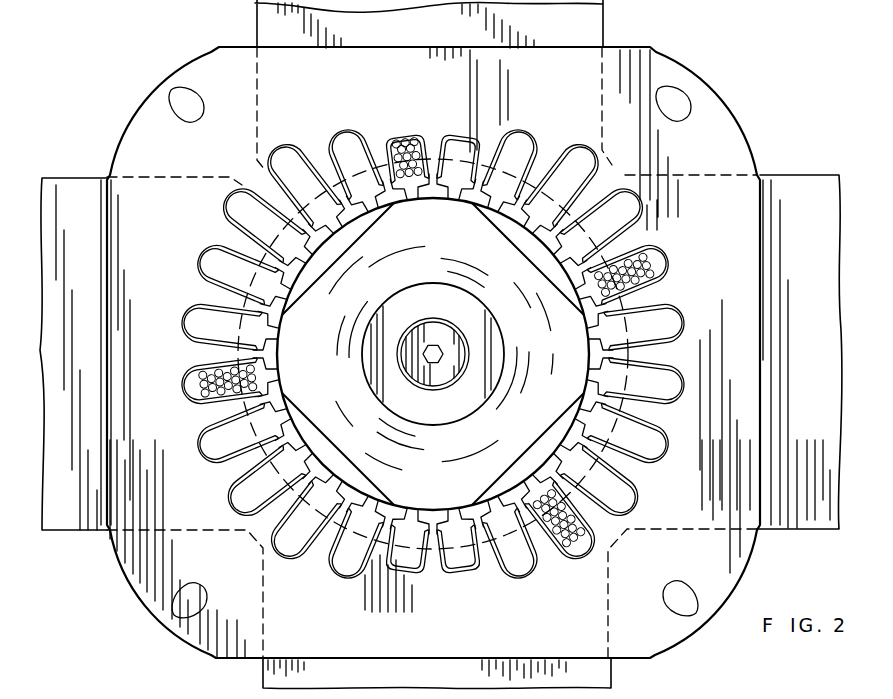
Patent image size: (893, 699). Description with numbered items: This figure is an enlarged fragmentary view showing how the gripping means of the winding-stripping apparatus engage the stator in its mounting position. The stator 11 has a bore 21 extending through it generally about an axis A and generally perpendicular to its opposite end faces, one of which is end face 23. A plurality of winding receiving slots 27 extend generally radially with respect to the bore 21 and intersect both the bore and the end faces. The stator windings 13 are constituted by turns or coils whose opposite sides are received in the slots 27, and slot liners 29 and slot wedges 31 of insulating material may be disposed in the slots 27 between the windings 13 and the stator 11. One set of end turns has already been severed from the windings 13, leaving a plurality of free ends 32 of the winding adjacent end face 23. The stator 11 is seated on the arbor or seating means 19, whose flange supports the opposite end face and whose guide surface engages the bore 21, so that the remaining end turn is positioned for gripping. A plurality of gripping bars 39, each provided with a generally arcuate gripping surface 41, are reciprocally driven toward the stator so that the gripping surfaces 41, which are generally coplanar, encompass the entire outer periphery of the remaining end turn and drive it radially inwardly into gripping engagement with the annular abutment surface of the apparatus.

The stator 11 is at (698, 72).
The stator windings 13 is at (650, 261).
The arbor or seating means 19 is at (433, 354).
The bore 21 is at (433, 354).
The end face 23 is at (137, 128).
The winding receiving slots 27 is at (418, 354).
The slot liners 29 is at (672, 303).
The slot wedges 31 is at (433, 354).
The free ends 32 is at (394, 328).
The gripping bars 39 is at (603, 33).
The gripping surface 41 is at (417, 350).
The axis A is at (433, 354).